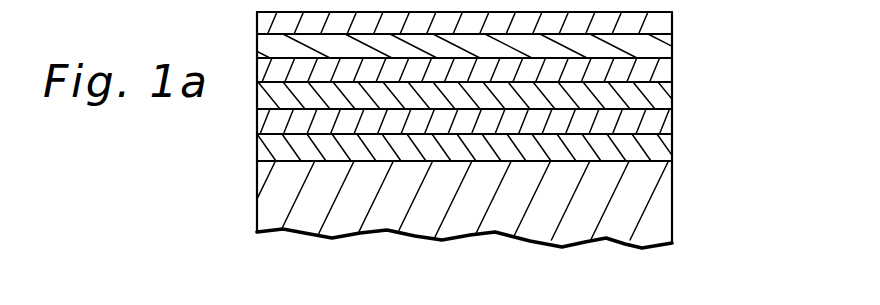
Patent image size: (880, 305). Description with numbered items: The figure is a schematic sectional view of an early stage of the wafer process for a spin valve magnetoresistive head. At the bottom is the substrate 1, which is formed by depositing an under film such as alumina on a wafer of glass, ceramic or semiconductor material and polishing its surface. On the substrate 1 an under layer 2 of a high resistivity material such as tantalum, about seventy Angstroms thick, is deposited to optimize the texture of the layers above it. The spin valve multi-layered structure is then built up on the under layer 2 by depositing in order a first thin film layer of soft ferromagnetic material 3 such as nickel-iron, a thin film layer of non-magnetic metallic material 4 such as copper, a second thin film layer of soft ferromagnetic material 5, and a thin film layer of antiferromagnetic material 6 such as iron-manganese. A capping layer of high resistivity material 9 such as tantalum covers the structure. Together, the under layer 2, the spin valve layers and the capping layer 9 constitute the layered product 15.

The substrate 1 is at (343, 225).
The under layer 2 is at (672, 160).
The first thin film layer of soft ferromagnetic material 3 is at (672, 131).
The thin film layer of non-magnetic metallic material 4 is at (672, 103).
The second thin film layer of soft ferromagnetic material 5 is at (672, 74).
The thin film layer of antiferromagnetic material 6 is at (672, 46).
The capping layer of high resistivity material 9 is at (672, 21).
The layered product 15 is at (731, 3).